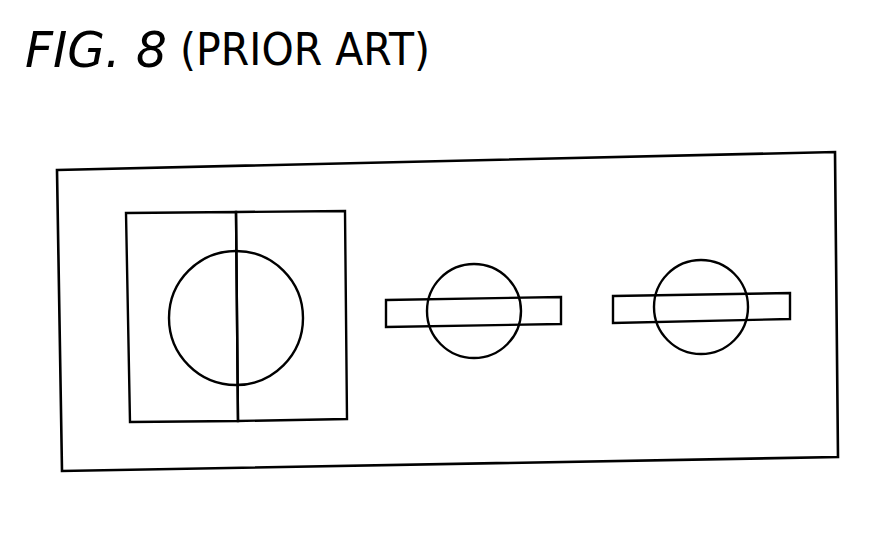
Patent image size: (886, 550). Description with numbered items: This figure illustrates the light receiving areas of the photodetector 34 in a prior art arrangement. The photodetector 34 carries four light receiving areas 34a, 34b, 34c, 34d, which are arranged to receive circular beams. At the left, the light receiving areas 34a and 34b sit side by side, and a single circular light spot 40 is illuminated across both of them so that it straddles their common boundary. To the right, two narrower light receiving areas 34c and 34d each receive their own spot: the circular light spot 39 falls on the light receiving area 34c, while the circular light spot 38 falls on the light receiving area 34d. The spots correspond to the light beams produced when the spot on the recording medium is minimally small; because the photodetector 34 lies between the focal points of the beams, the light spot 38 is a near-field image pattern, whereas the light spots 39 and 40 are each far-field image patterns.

The photodetector 34 is at (475, 167).
The light receiving area 34a is at (193, 229).
The light receiving area 34b is at (309, 231).
The light receiving area 34c is at (541, 306).
The light receiving area 34d is at (768, 302).
The circular light spot 38 is at (708, 350).
The circular light spot 39 is at (483, 350).
The circular light spot 40 is at (267, 367).